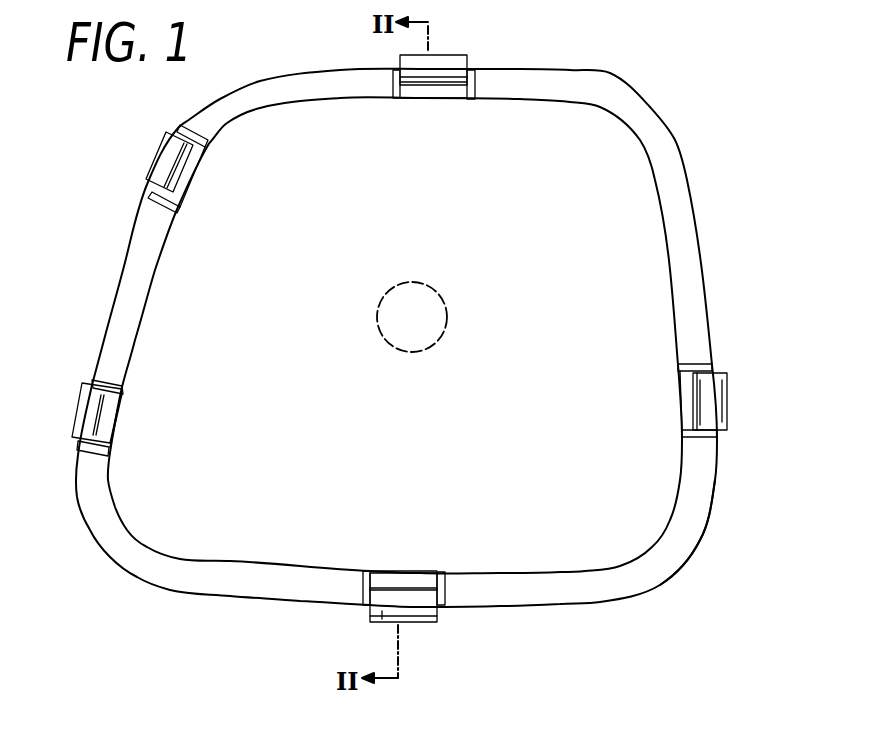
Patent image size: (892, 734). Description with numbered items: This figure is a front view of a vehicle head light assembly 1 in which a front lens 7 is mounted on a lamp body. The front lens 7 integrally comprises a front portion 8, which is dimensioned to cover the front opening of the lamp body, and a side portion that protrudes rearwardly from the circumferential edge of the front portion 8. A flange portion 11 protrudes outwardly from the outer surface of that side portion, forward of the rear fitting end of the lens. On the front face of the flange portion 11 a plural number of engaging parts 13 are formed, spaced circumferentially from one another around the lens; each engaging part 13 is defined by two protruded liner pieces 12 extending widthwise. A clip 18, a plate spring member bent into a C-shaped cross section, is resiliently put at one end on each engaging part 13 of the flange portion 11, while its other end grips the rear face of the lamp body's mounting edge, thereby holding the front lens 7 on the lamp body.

The vehicle head light assembly 1 is at (104, 208).
The front lens 7 is at (640, 190).
The front portion 8 is at (182, 530).
The flange portion 11 is at (707, 480).
The protruded liner pieces 12 is at (393, 80).
The engaging parts 13 is at (193, 168).
The clip 18 is at (168, 146).